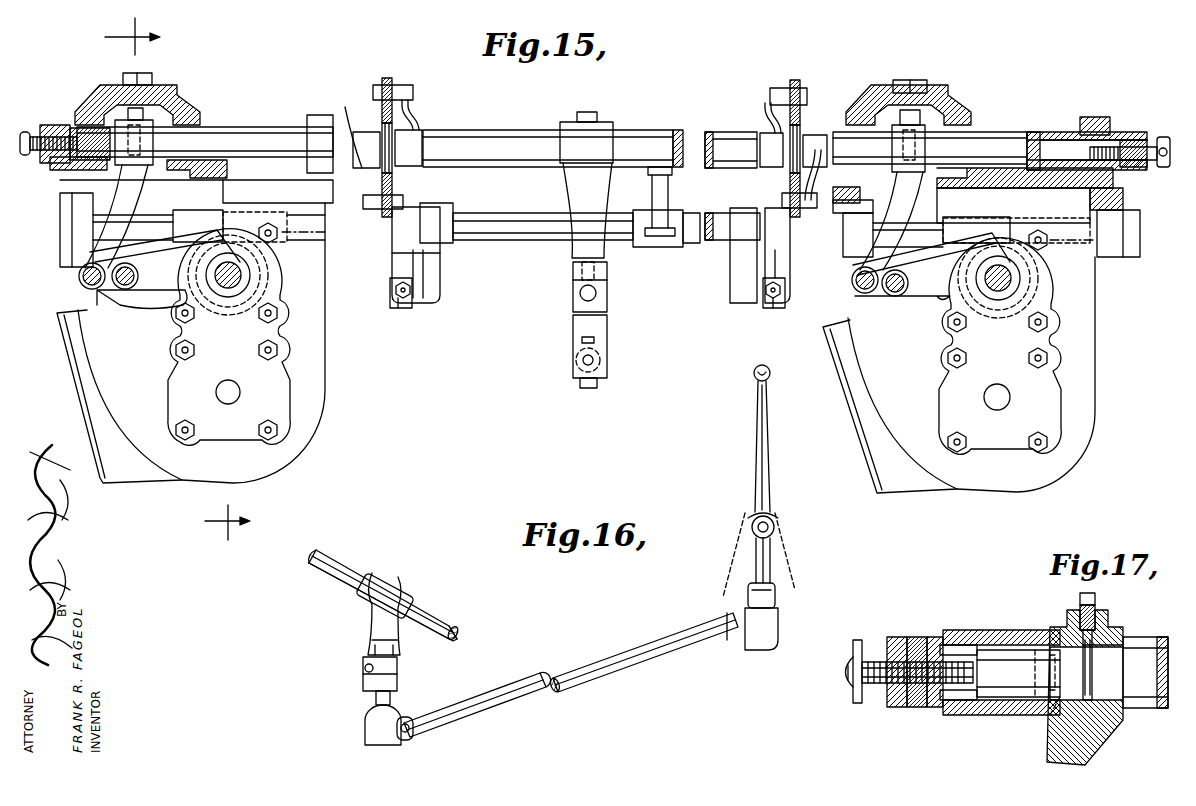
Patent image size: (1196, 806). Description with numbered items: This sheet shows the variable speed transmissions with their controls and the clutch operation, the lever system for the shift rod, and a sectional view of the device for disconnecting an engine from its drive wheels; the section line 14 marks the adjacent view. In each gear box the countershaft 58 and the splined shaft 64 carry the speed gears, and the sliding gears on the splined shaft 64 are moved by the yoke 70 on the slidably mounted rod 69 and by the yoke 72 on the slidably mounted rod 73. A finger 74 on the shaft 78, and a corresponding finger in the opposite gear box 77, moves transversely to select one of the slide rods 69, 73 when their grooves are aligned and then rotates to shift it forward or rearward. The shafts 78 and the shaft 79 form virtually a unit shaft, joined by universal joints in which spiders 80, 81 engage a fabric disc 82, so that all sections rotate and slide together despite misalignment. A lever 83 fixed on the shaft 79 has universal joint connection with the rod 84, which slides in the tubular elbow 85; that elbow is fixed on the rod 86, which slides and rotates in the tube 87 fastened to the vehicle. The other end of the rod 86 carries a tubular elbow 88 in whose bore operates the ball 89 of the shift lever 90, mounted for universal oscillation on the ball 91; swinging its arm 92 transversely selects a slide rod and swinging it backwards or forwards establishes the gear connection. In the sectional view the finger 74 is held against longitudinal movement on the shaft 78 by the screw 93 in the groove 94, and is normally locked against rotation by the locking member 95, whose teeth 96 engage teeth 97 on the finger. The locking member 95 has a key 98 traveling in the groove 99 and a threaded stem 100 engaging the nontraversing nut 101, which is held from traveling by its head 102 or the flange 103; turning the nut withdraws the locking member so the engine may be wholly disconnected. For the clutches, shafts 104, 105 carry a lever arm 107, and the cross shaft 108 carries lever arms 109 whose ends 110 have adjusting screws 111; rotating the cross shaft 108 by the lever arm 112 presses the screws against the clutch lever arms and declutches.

In FIG. 15, the section line of FIG. 14 is at (188, 279).
In FIG. 15, the countershaft 58 is at (235, 392).
In FIG. 15, the splined shaft 64 is at (240, 280).
In FIG. 15, the slidably mounted rod 69 is at (80, 280).
In FIG. 15, the yoke 70 is at (132, 250).
In FIG. 15, the yoke 72 is at (160, 295).
In FIG. 15, the slidably mounted rod 73 is at (122, 290).
In FIG. 15, the finger 74 is at (140, 176).
In FIG. 17, the finger 74 is at (1095, 748).
In FIG. 15, the gear box 77 is at (1085, 320).
In FIG. 15, the shaft 78 is at (250, 127).
In FIG. 17, the shaft 78 is at (1135, 710).
In FIG. 15, the shaft 79 is at (480, 130).
In FIG. 16, the shaft 79 is at (445, 626).
In FIG. 15, the spider 80 is at (356, 129).
In FIG. 15, the spider 81 is at (415, 115).
In FIG. 15, the fabric disc 82 is at (390, 78).
In FIG. 15, the finger or lever 83 is at (572, 200).
In FIG. 16, the finger or lever 83 is at (370, 632).
In FIG. 15, the rod 84 is at (607, 312).
In FIG. 16, the rod 84 is at (398, 692).
In FIG. 15, the tubular elbow 85 is at (607, 340).
In FIG. 16, the tubular elbow 85 is at (385, 745).
In FIG. 15, the rod 86 is at (580, 357).
In FIG. 16, the rod 86 is at (412, 738).
In FIG. 16, the tube 87 is at (607, 660).
In FIG. 16, the tubular elbow 88 is at (770, 645).
In FIG. 16, the ball 89 is at (775, 583).
In FIG. 16, the shift lever 90 is at (756, 560).
In FIG. 16, the ball 91 is at (752, 518).
In FIG. 16, the arm 92 is at (770, 410).
In FIG. 17, the screw 93 is at (1097, 598).
In FIG. 17, the groove 94 is at (1128, 637).
In FIG. 17, the locking member 95 is at (985, 650).
In FIG. 17, the teeth 96 is at (1040, 650).
In FIG. 17, the teeth 97 is at (1048, 705).
In FIG. 15, the key 98 is at (1090, 118).
In FIG. 17, the key 98 is at (997, 630).
In FIG. 17, the groove 99 is at (955, 640).
In FIG. 15, the threaded stem 100 is at (1160, 137).
In FIG. 17, the threaded stem 100 is at (875, 690).
In FIG. 15, the nontraversing nut 101 is at (38, 137).
In FIG. 17, the nontraversing nut 101 is at (900, 637).
In FIG. 15, the head 102 is at (60, 128).
In FIG. 17, the head 102 is at (915, 707).
In FIG. 17, the flange 103 is at (955, 700).
In FIG. 15, the shaft 104 is at (373, 253).
In FIG. 15, the shaft 105 is at (807, 228).
In FIG. 15, the lever arm 107 is at (410, 270).
In FIG. 15, the cross shaft 108 is at (612, 238).
In FIG. 15, the lever arm 109 is at (432, 258).
In FIG. 15, the end 110 is at (390, 290).
In FIG. 15, the adjusting screw 111 is at (398, 303).
In FIG. 15, the lever arm 112 is at (650, 190).